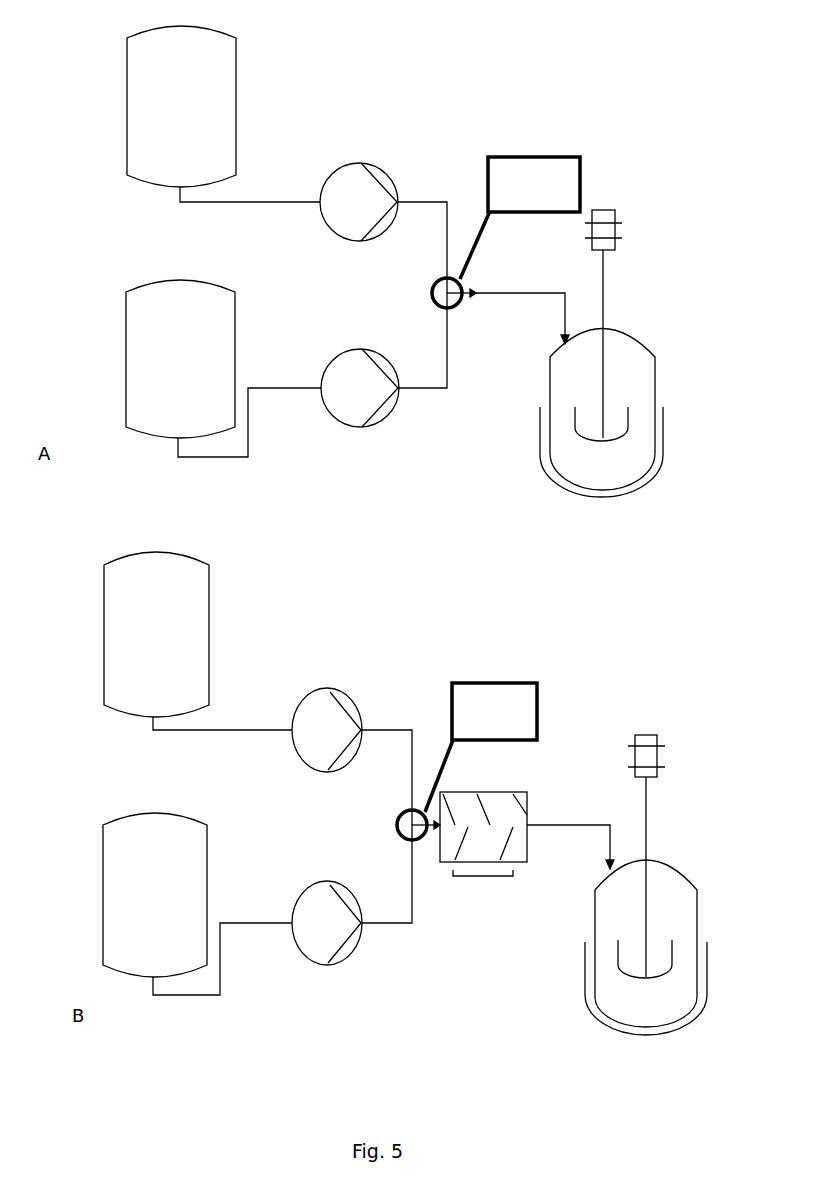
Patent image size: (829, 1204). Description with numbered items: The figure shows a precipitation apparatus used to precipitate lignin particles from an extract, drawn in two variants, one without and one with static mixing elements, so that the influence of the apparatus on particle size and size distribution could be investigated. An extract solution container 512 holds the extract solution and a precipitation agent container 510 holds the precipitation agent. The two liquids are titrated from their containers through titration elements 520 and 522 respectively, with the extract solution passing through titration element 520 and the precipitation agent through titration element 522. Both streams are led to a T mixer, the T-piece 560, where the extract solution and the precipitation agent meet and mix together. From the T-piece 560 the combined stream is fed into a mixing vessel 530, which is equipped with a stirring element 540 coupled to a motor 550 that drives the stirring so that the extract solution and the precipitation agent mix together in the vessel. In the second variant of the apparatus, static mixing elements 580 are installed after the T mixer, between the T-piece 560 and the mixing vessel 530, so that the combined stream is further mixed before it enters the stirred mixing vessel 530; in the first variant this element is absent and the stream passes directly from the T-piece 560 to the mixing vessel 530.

In FIG. 5A, the precipitation agent container 510 is at (234, 360).
In FIG. 5B, the precipitation agent container 510 is at (207, 903).
In FIG. 5A, the extract solution container 512 is at (236, 102).
In FIG. 5B, the extract solution container 512 is at (210, 668).
In FIG. 5A, the titration element 520 is at (361, 164).
In FIG. 5B, the titration element 520 is at (352, 679).
In FIG. 5A, the titration element 522 is at (375, 339).
In FIG. 5B, the titration element 522 is at (350, 875).
In FIG. 5A, the mixing vessel 530 is at (657, 393).
In FIG. 5B, the mixing vessel 530 is at (697, 928).
In FIG. 5A, the stirring element 540 is at (603, 300).
In FIG. 5B, the stirring element 540 is at (646, 828).
In FIG. 5A, the motor 550 is at (616, 229).
In FIG. 5B, the motor 550 is at (658, 774).
In FIG. 5A, the T-piece 560 is at (458, 305).
In FIG. 5B, the T-piece 560 is at (422, 838).
In FIG. 5B, the static mixing elements 580 is at (555, 799).